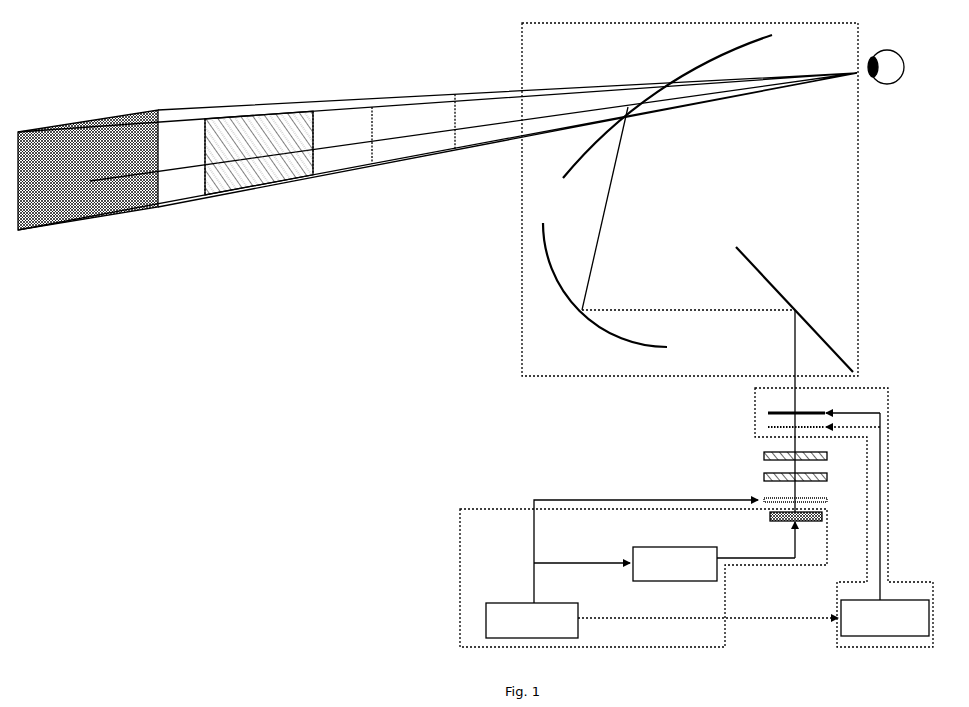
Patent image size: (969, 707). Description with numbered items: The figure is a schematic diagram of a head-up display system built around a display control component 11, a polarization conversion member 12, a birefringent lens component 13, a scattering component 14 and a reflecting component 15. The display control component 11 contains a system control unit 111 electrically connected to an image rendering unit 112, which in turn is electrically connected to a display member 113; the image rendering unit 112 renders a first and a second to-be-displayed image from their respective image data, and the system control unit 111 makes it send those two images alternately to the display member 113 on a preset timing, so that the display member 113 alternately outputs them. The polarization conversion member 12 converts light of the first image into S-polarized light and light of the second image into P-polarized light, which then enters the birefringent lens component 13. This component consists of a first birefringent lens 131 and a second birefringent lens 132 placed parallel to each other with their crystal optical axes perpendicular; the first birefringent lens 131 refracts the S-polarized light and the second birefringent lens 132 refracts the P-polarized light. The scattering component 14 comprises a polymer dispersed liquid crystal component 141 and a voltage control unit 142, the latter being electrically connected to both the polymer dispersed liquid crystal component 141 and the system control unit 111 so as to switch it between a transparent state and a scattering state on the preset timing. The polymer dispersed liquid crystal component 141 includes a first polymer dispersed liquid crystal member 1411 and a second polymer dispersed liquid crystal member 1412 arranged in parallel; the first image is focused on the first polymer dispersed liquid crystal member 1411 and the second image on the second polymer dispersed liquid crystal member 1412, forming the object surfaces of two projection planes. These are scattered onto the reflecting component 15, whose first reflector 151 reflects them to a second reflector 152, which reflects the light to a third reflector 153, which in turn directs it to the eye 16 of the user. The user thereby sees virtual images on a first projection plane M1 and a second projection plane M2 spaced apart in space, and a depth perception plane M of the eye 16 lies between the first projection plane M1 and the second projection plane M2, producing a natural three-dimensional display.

The display control component 11 is at (500, 508).
The system control unit 111 is at (532, 620).
The image rendering unit 112 is at (675, 564).
The display member 113 is at (775, 522).
The polarization conversion member 12 is at (826, 497).
The birefringent lens component 13 is at (706, 453).
The first birefringent lens 131 is at (764, 477).
The second birefringent lens 132 is at (764, 456).
The scattering component 14 is at (755, 398).
The polymer dispersed liquid crystal component 141 is at (692, 404).
The first polymer dispersed liquid crystal member 1411 is at (768, 427).
The second polymer dispersed liquid crystal member 1412 is at (768, 413).
The voltage control unit 142 is at (885, 618).
The reflecting component 15 is at (520, 243).
The first reflector 151 is at (770, 281).
The second reflector 152 is at (568, 298).
The third reflector 153 is at (665, 79).
The eye 16 is at (882, 52).
The first projection plane M1 is at (88, 180).
The depth perception plane M is at (259, 163).
The second projection plane M2 is at (413, 148).